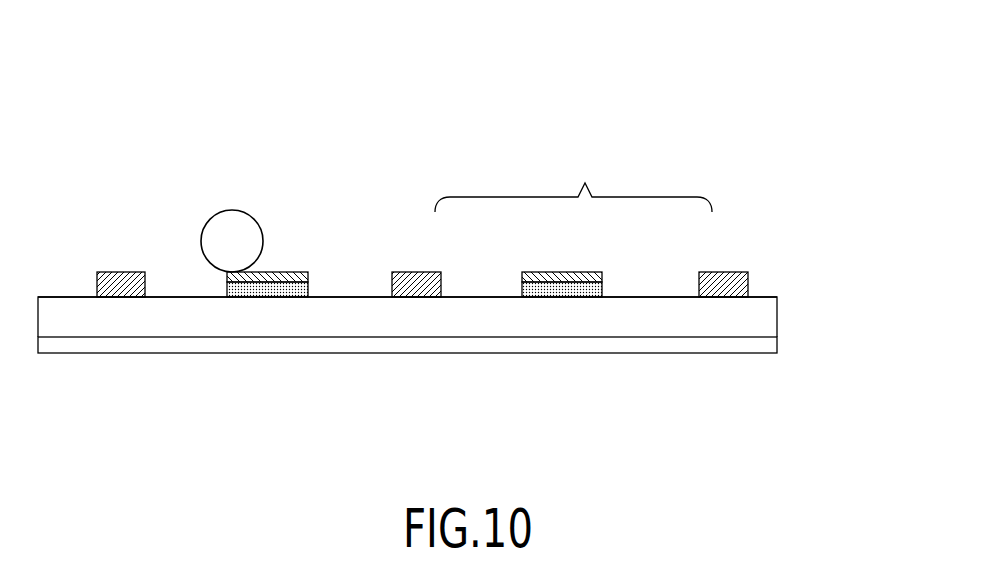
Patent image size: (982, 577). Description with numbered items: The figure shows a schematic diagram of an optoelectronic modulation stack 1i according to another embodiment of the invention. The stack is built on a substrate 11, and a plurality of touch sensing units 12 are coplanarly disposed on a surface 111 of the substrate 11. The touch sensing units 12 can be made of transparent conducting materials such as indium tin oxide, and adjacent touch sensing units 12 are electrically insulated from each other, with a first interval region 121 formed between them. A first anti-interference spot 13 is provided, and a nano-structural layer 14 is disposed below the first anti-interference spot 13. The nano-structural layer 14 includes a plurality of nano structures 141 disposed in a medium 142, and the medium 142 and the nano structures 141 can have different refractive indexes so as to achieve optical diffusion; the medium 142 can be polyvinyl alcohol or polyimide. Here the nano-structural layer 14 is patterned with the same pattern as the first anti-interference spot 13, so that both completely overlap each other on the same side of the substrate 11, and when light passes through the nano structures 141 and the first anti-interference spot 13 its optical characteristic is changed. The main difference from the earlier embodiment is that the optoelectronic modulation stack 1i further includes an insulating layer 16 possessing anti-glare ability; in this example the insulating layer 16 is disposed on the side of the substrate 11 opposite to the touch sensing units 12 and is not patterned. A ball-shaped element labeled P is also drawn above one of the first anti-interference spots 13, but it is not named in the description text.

The optoelectronic modulation stack 1i is at (150, 84).
The substrate 11 is at (777, 313).
The surface 111 is at (773, 296).
The touch sensing unit 12 is at (122, 272).
The first interval region 121 is at (573, 181).
The first anti-interference spot 13 is at (277, 272).
The nano-structural layer 14 is at (335, 385).
The nano structures 141 is at (243, 297).
The medium 142 is at (297, 297).
The insulating layer 16 is at (777, 346).
The solder ball P is at (231, 228).